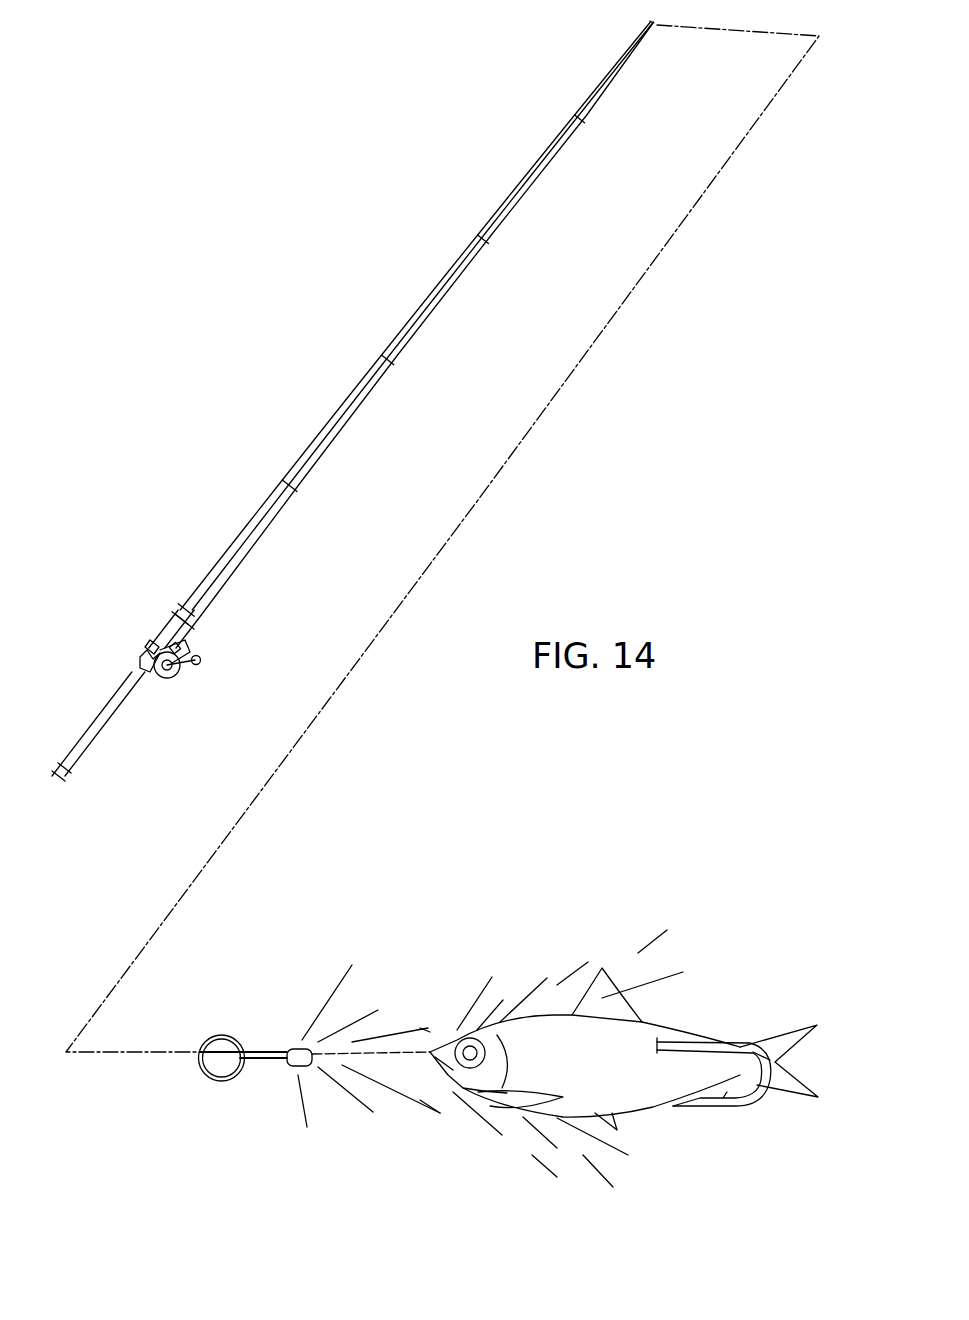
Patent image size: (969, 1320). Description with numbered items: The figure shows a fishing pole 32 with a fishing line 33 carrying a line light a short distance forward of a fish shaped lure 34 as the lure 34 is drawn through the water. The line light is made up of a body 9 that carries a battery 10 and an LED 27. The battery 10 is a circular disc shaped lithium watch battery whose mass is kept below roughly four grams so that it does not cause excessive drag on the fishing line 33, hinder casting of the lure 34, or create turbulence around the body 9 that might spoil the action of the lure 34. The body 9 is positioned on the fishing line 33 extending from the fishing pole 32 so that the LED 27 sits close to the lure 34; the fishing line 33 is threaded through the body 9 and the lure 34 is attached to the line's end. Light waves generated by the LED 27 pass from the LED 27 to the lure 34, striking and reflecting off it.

The fishing rod 32 is at (330, 430).
The fishing line 33 is at (273, 783).
The lure 34 is at (601, 967).
The battery 10 is at (223, 1033).
The LED 27 is at (291, 1040).
The body 9 is at (249, 1088).